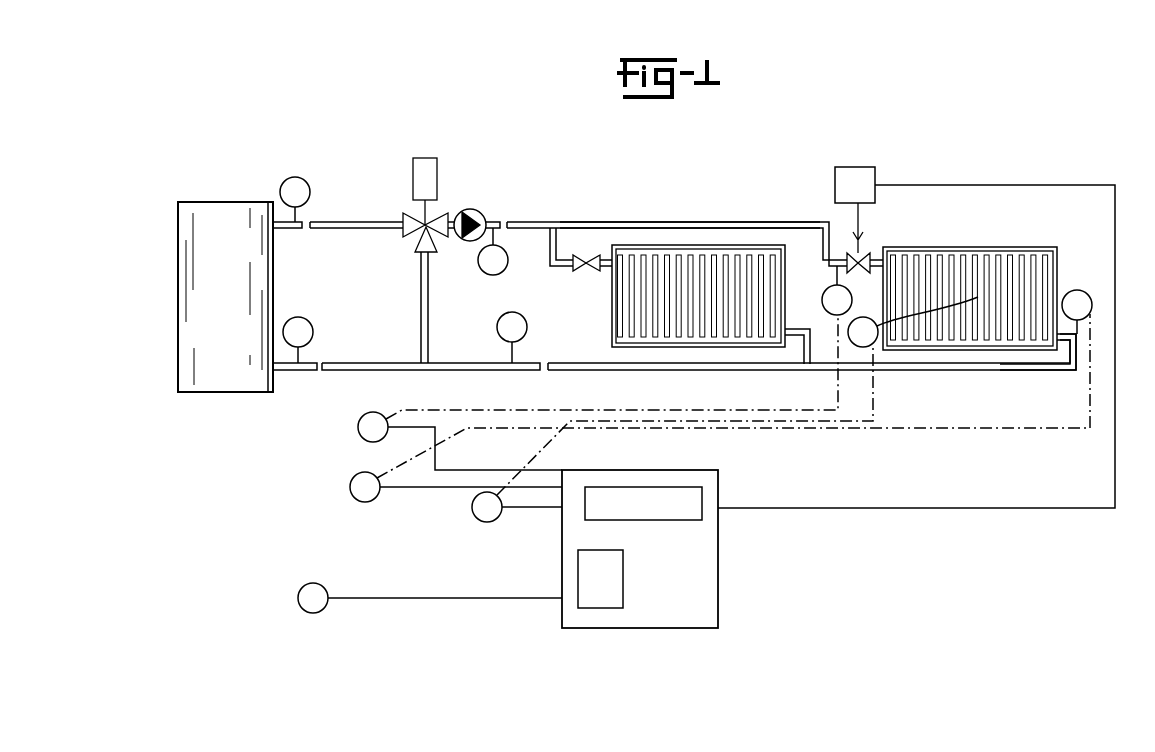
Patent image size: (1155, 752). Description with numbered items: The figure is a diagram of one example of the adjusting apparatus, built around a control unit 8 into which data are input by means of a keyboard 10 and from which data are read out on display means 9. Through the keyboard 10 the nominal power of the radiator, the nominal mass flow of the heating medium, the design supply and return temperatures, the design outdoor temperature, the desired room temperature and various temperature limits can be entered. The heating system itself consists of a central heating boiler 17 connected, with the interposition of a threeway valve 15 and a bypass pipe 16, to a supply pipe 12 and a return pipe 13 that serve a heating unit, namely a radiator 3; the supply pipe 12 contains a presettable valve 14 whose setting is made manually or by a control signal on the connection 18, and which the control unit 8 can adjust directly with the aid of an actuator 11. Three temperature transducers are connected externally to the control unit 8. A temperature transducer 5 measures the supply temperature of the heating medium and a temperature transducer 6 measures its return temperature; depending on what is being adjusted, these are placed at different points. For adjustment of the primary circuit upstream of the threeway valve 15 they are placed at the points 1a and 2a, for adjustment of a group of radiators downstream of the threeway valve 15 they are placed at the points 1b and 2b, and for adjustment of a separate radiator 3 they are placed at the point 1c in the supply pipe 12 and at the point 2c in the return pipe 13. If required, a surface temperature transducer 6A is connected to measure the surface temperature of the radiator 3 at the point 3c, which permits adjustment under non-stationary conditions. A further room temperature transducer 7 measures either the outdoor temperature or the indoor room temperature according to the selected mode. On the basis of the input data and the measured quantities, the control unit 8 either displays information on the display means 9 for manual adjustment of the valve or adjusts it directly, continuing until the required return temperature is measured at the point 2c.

The measuring point 1a is at (295, 199).
The measuring point 1b is at (493, 251).
The measuring point 1c is at (837, 290).
The measuring point 2a is at (298, 340).
The measuring point 2b is at (512, 337).
The measuring point 2c is at (1077, 312).
The radiator 3 is at (688, 340).
The measuring point 3c is at (913, 322).
The temperature transducer 5 is at (598, 393).
The temperature transducer 6 is at (720, 408).
The surface temperature transducer 6A is at (672, 434).
The room temperature transducer 7 is at (430, 598).
The control unit 8 is at (634, 531).
The display means 9 is at (638, 495).
The keyboard 10 is at (583, 562).
The actuator 11 is at (848, 175).
The supply pipe 12 is at (683, 222).
The return pipe 13 is at (1030, 370).
The valve 14 is at (868, 258).
The threeway valve 15 is at (423, 165).
The bypass pipe 16 is at (423, 290).
The central heating boiler 17 is at (222, 215).
The connection 18 is at (925, 510).